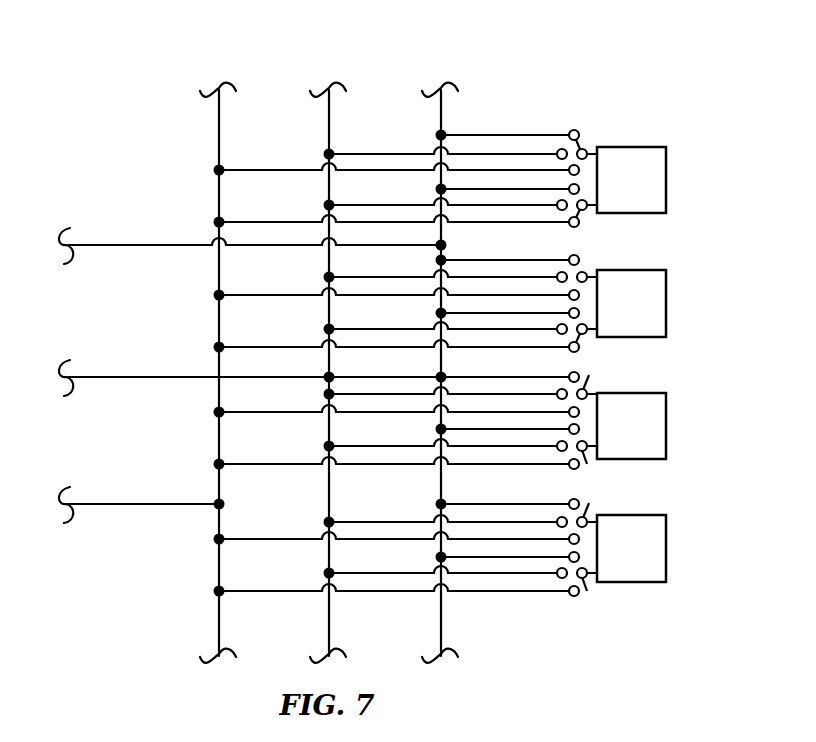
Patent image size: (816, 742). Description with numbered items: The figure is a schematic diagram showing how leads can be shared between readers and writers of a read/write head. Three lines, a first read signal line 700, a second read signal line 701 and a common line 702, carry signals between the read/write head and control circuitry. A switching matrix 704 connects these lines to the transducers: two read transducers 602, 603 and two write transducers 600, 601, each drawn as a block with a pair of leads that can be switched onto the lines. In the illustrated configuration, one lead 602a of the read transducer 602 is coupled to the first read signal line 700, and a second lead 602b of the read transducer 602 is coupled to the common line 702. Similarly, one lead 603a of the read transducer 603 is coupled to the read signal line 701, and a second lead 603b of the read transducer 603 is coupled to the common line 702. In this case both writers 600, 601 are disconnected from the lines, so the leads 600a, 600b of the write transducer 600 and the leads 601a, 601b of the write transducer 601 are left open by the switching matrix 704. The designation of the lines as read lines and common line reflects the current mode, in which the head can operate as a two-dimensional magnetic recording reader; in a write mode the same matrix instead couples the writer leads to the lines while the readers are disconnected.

The switching matrix 704 is at (530, 90).
The first read signal line 700 is at (138, 250).
The read signal line 701 is at (138, 382).
The common line 702 is at (138, 509).
The read transducer 602 is at (667, 179).
The lead of read transducer 602 602a is at (593, 147).
The second lead of read transducer 602 602b is at (593, 213).
The read transducer 603 is at (667, 302).
The lead of read transducer 603 603a is at (593, 270).
The second lead of read transducer 603 603b is at (593, 337).
The write transducer 600 is at (667, 425).
The lead of write transducer 600 600a is at (593, 393).
The second lead of write transducer 600 600b is at (593, 459).
The write transducer 601 is at (667, 548).
The lead of write transducer 601 601a is at (593, 515).
The second lead of write transducer 601 601b is at (593, 582).